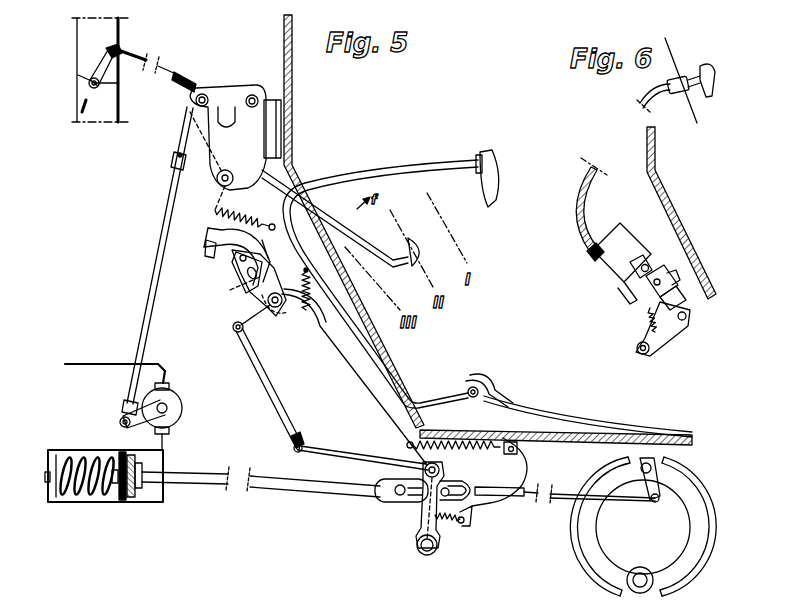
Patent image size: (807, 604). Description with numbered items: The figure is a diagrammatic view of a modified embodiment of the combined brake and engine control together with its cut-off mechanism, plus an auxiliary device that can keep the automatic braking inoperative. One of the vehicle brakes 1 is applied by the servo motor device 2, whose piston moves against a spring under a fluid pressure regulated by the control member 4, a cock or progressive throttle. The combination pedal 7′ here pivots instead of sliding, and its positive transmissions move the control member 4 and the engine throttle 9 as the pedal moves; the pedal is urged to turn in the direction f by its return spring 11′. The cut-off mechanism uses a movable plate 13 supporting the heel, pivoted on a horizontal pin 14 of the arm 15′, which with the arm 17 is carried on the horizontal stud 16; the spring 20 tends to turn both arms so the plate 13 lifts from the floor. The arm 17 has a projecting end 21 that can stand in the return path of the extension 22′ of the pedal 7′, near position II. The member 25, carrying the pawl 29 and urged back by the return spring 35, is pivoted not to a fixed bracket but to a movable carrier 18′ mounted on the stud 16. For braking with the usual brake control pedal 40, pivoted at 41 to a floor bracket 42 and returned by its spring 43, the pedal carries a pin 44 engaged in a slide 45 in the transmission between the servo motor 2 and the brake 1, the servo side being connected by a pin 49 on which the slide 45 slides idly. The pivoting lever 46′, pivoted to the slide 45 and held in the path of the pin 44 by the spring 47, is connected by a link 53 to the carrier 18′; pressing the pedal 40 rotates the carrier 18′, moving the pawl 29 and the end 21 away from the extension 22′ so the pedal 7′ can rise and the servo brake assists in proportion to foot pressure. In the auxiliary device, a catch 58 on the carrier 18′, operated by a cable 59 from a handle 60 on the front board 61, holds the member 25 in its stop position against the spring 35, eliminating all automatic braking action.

In FIG. 5, the engine throttle 9 is at (134, 86).
In FIG. 5, the brake control pedal 40 is at (481, 156).
In FIG. 5, the movable plate 13 is at (522, 406).
In FIG. 5, the return spring 43 is at (486, 431).
In FIG. 5, the horizontal pin 14 is at (469, 387).
In FIG. 5, the combination pedal 7′ is at (424, 258).
In FIG. 5, the return spring 11′ is at (245, 212).
In FIG. 5, the projecting end 21 is at (216, 246).
In FIG. 5, the extension of the pedal 22′ is at (208, 250).
In FIG. 5, the arm 17 is at (262, 250).
In FIG. 5, the pawl 29 is at (240, 261).
In FIG. 6, the pawl 29 is at (642, 262).
In FIG. 5, the member 25 is at (247, 280).
In FIG. 6, the member 25 is at (679, 292).
In FIG. 5, the movable carrier 18′ is at (258, 292).
In FIG. 6, the movable carrier 18′ is at (622, 246).
In FIG. 5, the spring 20 is at (308, 304).
In FIG. 5, the horizontal stud 16 is at (275, 307).
In FIG. 5, the arm 15′ is at (318, 322).
In FIG. 5, the link 53 is at (270, 397).
In FIG. 5, the control member 4 is at (170, 394).
In FIG. 5, the servo motor device 2 is at (118, 503).
In FIG. 5, the pin 49 is at (394, 497).
In FIG. 5, the pivoting lever 46′ is at (428, 506).
In FIG. 5, the slide 45 is at (442, 469).
In FIG. 5, the pivot 41 is at (433, 553).
In FIG. 5, the pin 44 is at (470, 494).
In FIG. 5, the bracket 42 is at (470, 509).
In FIG. 5, the spring 47 is at (448, 532).
In FIG. 5, the vehicle brake 1 is at (595, 554).
In FIG. 6, the front board 61 is at (686, 102).
In FIG. 6, the handle 60 is at (711, 99).
In FIG. 6, the cable 59 is at (583, 189).
In FIG. 6, the catch 58 is at (670, 268).
In FIG. 6, the return spring 35 is at (651, 315).